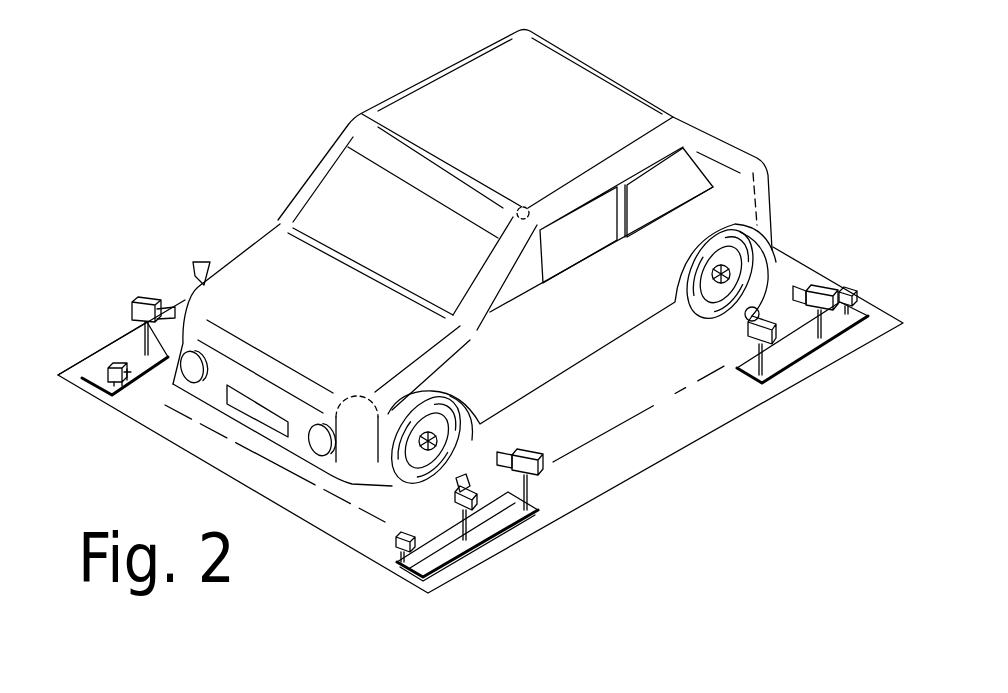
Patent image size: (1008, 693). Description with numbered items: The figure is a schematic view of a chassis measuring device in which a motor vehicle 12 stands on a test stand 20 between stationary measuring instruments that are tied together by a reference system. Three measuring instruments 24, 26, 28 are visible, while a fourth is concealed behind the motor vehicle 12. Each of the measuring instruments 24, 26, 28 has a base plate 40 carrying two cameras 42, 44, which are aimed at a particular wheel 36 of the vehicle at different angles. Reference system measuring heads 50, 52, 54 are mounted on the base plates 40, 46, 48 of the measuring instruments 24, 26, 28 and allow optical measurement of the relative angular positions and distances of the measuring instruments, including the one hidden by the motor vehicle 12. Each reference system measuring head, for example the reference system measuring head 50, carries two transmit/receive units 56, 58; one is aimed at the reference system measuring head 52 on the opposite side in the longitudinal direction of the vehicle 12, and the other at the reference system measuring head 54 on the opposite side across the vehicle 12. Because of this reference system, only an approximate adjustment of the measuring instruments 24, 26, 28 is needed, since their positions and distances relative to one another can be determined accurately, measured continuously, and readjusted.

The motor vehicle 12 is at (748, 198).
The test stand 20 is at (678, 486).
The measuring instrument 24 is at (510, 546).
The measuring instrument 26 is at (835, 364).
The measuring instrument 28 is at (110, 342).
The wheel 36 is at (463, 420).
The base plate 40 is at (453, 548).
The camera 42 is at (455, 495).
The camera 44 is at (535, 452).
The base plate 46 is at (785, 360).
The base plate 48 is at (118, 382).
The reference system measuring head 50 is at (399, 556).
The reference system measuring head 52 is at (847, 287).
The reference system measuring head 54 is at (84, 378).
The transmit/receive unit 56 is at (423, 578).
The transmit/receive unit 58 is at (393, 535).